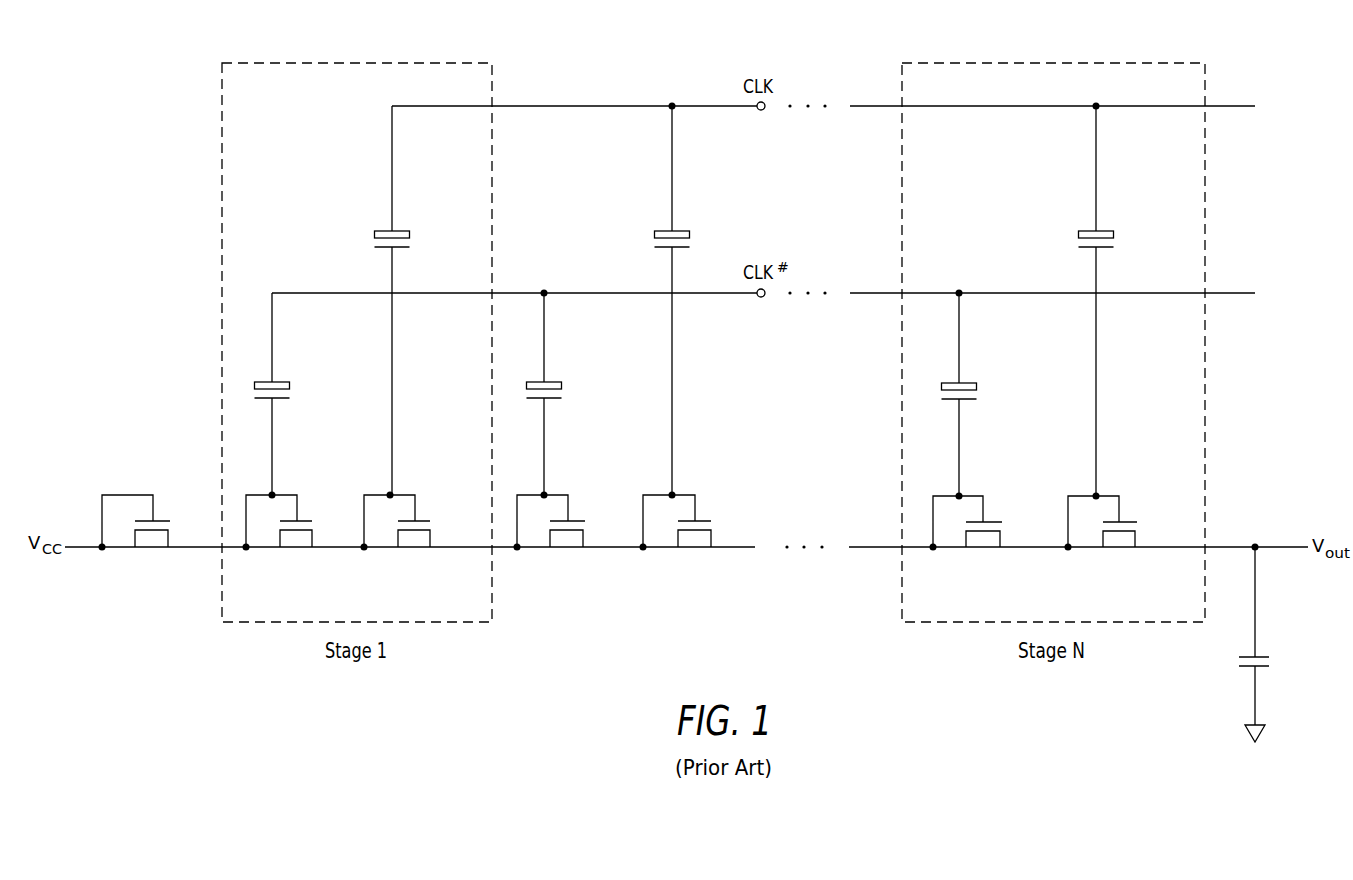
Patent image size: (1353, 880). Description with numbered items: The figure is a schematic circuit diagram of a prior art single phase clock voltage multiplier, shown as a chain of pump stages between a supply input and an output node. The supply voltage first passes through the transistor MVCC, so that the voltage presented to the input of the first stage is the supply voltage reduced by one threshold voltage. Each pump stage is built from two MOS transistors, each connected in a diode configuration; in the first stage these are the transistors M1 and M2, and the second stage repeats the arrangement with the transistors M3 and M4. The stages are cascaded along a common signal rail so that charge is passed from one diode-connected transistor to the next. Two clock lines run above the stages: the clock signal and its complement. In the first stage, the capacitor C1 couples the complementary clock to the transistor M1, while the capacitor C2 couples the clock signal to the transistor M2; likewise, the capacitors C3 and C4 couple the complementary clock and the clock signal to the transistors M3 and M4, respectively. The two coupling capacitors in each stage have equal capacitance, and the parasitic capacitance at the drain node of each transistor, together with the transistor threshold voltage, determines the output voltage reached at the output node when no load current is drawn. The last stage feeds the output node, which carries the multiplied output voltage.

The transistor MVcc MVCC is at (151, 518).
The MOS transistor M1 is at (285, 517).
The MOS transistor M2 is at (404, 517).
The MOS transistor M3 is at (558, 516).
The MOS transistor M4 is at (676, 521).
The capacitor C1 is at (286, 394).
The capacitor C2 is at (407, 300).
The capacitor C3 is at (559, 394).
The capacitor C4 is at (689, 300).